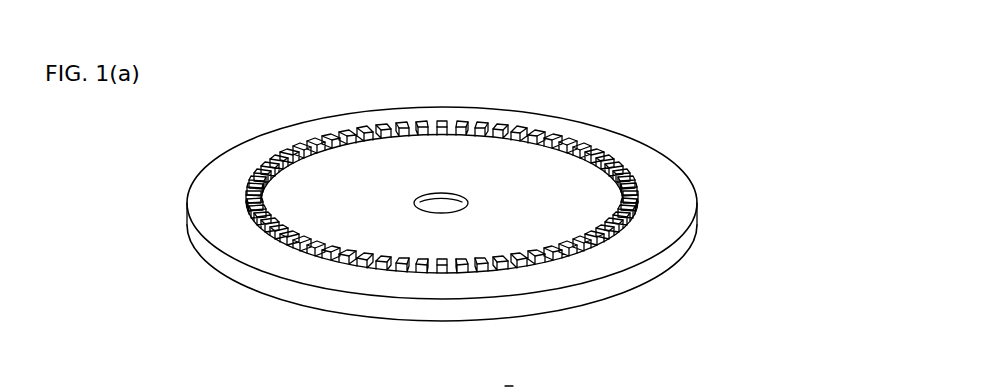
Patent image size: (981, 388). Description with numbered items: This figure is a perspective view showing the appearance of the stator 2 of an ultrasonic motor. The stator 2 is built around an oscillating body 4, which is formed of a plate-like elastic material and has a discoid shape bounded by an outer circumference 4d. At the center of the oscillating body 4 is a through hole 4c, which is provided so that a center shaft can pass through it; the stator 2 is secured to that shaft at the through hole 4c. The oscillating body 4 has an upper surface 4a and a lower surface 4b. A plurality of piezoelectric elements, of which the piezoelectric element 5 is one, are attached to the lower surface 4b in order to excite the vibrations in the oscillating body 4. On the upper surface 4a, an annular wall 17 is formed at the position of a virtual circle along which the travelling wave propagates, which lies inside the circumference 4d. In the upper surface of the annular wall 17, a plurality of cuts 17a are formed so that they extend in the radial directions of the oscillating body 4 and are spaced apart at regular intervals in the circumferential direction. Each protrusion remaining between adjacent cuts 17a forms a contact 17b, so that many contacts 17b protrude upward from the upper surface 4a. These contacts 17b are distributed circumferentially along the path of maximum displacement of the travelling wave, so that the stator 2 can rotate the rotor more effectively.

The stator 2 is at (297, 87).
The oscillating body 4 is at (195, 253).
The upper surface 4a is at (663, 195).
The lower surface 4b is at (607, 300).
The through hole 4c is at (450, 190).
The circumference 4d is at (665, 250).
The annular wall 17 is at (527, 275).
The cut 17a is at (450, 272).
The contact 17b is at (440, 272).
The piezoelectric element 5 is at (511, 382).